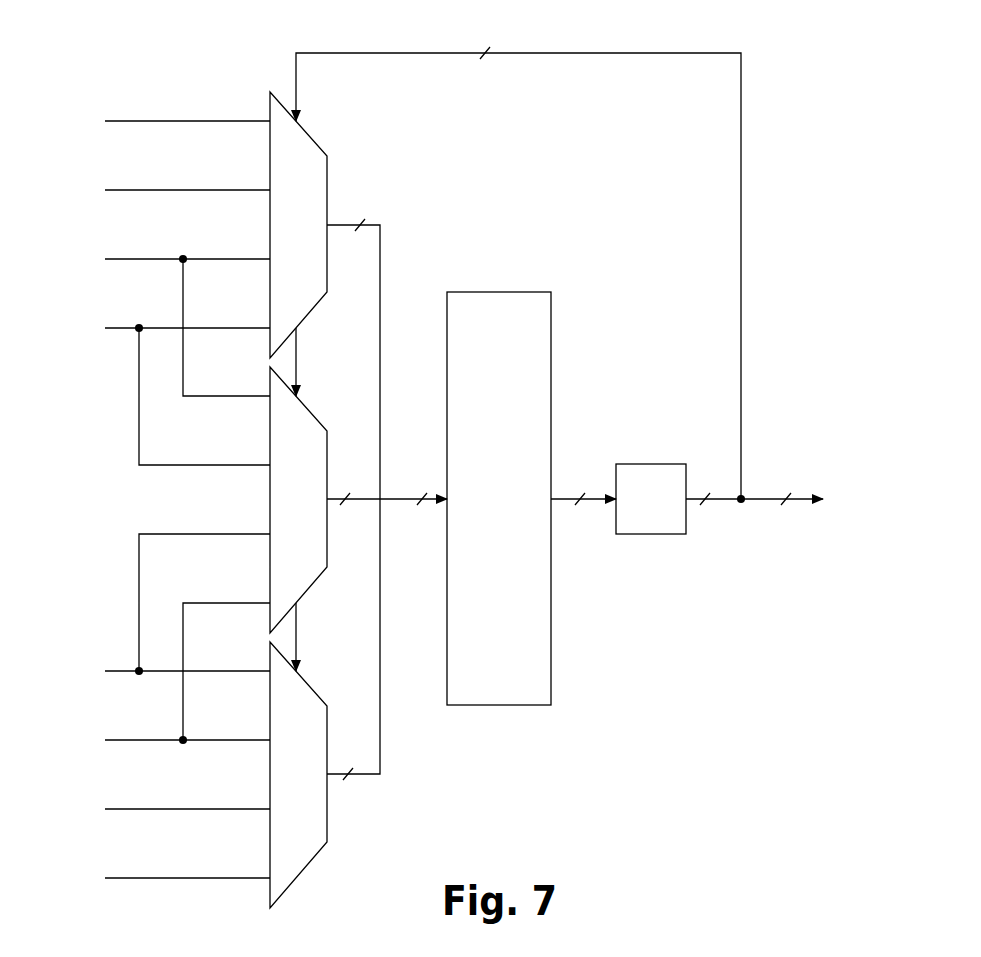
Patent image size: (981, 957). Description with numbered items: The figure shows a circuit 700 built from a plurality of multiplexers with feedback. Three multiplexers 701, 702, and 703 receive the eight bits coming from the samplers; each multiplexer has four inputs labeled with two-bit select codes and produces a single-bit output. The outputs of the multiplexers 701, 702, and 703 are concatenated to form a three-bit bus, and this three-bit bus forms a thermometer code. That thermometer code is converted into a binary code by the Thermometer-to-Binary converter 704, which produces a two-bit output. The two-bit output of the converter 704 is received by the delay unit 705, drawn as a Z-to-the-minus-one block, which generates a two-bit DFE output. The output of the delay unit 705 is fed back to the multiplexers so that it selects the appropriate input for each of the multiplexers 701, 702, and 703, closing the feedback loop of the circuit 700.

The circuit 700 is at (150, 23).
The multiplexer 701 is at (320, 228).
The multiplexer 702 is at (320, 502).
The multiplexer 703 is at (320, 780).
The Thermometer-to-Binary converter 704 is at (514, 693).
The delay unit 705 is at (666, 529).